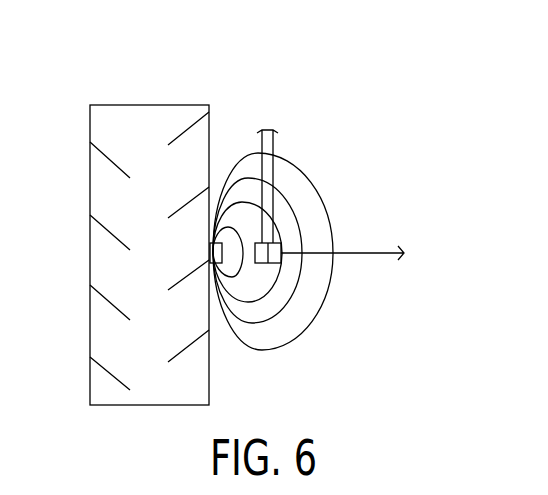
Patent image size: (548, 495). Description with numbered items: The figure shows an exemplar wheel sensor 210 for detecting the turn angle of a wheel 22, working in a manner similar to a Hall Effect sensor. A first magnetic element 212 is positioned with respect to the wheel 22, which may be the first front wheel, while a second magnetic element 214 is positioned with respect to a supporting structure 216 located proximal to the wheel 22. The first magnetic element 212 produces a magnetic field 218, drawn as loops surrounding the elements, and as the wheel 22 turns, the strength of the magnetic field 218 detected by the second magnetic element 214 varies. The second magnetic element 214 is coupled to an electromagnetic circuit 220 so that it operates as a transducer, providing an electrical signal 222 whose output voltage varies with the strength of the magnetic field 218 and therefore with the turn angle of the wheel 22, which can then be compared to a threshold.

The wheel sensor 210 is at (190, 43).
The wheel 22 is at (108, 338).
The first magnetic element 212 is at (228, 225).
The second magnetic element 214 is at (262, 265).
The supporting structure 216 is at (274, 143).
The magnetic field 218 is at (355, 203).
The electromagnetic circuit 220 is at (273, 265).
The electrical signal 222 is at (373, 254).